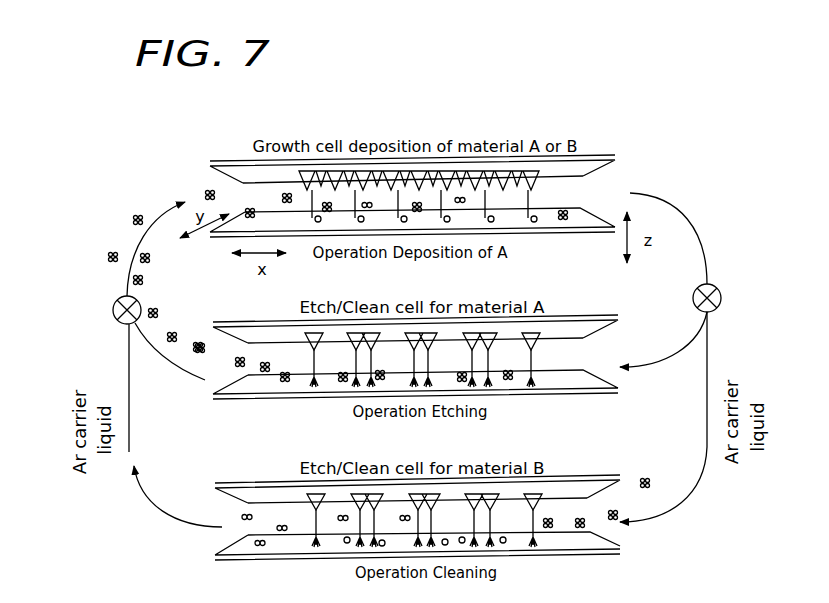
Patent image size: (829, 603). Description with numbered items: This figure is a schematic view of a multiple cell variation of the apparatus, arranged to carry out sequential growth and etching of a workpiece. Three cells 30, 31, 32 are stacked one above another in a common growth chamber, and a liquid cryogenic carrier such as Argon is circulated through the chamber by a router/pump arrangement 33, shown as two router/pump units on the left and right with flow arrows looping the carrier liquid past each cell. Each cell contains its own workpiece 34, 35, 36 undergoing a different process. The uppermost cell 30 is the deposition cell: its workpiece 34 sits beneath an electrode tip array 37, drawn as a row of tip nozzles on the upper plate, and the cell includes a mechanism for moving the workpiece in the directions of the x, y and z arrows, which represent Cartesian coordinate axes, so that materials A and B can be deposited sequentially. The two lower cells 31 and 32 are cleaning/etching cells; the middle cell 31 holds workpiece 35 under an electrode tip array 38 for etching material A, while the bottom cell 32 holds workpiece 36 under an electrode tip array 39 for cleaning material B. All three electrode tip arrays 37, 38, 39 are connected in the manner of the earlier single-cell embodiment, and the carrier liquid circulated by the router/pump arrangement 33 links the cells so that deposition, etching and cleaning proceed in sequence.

The deposition cell 30 is at (447, 189).
The cleaning/etching cell 31 is at (440, 354).
The cleaning/etching cell 32 is at (473, 520).
The router/pump arrangement 33 is at (117, 297).
The workpiece 34 is at (587, 225).
The workpiece 35 is at (585, 372).
The workpiece 36 is at (573, 553).
The electrode tip array 37 is at (588, 156).
The electrode tip array 38 is at (567, 326).
The electrode tip array 39 is at (578, 489).